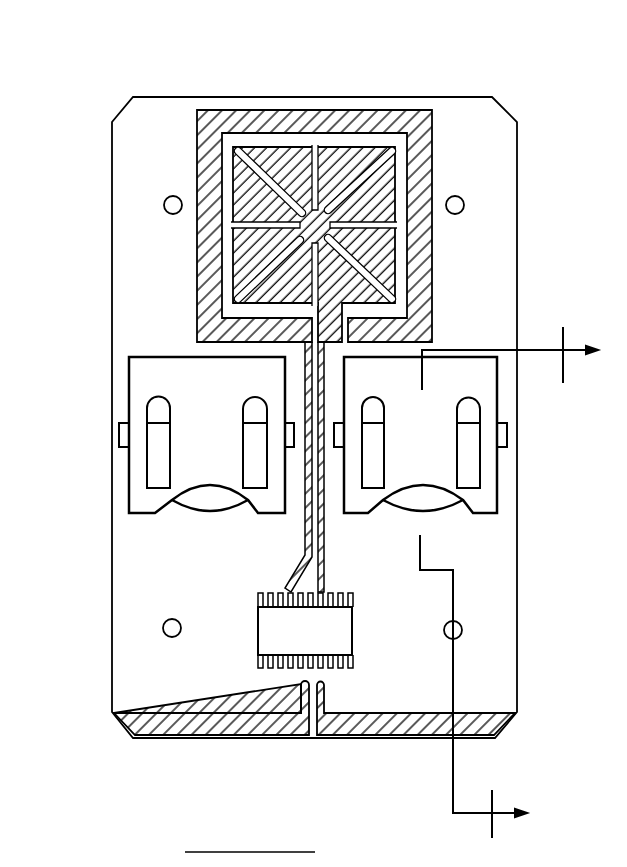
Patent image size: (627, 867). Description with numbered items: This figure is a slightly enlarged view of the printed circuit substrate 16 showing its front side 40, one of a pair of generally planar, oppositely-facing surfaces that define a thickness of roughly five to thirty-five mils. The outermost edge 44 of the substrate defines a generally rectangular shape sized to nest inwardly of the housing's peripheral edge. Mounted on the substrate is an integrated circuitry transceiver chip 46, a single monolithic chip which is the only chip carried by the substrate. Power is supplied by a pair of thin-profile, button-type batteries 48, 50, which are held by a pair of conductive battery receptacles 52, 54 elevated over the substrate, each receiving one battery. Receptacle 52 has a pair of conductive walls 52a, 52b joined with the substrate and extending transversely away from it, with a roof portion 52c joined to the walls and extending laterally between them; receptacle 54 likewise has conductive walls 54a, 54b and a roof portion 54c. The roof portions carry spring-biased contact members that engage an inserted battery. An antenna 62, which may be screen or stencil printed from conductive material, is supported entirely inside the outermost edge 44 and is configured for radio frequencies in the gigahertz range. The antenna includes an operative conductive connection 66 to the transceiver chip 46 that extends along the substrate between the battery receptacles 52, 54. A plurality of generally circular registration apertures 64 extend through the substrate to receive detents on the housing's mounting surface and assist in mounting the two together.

The printed circuit substrate 16 is at (182, 90).
The front side 40 is at (220, 598).
The outermost edge 44 is at (325, 96).
The integrated circuitry transceiver chip 46 is at (277, 627).
The battery 48 is at (208, 498).
The battery 50 is at (430, 498).
The conductive battery receptacle 52 is at (162, 459).
The conductive wall 52a is at (190, 392).
The conductive wall 52b is at (296, 398).
The roof portion 52c is at (232, 453).
The conductive battery receptacle 54 is at (470, 459).
The conductive wall 54a is at (405, 392).
The conductive wall 54b is at (510, 398).
The roof portion 54c is at (447, 453).
The antenna 62 is at (242, 120).
The registration aperture 64 is at (172, 196).
The operative conductive connection 66 is at (321, 547).